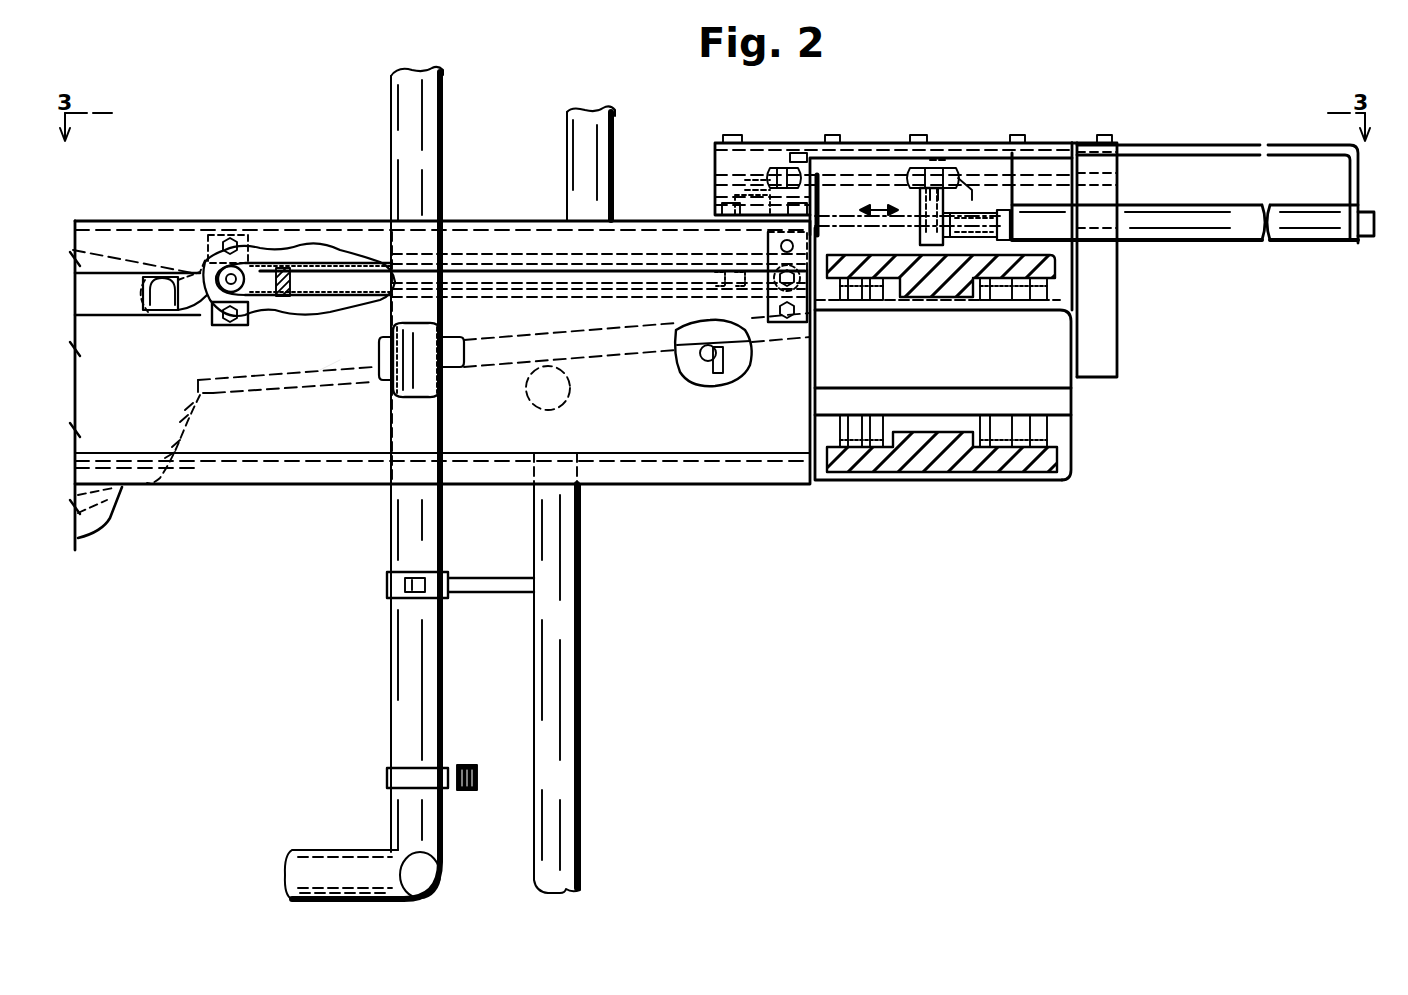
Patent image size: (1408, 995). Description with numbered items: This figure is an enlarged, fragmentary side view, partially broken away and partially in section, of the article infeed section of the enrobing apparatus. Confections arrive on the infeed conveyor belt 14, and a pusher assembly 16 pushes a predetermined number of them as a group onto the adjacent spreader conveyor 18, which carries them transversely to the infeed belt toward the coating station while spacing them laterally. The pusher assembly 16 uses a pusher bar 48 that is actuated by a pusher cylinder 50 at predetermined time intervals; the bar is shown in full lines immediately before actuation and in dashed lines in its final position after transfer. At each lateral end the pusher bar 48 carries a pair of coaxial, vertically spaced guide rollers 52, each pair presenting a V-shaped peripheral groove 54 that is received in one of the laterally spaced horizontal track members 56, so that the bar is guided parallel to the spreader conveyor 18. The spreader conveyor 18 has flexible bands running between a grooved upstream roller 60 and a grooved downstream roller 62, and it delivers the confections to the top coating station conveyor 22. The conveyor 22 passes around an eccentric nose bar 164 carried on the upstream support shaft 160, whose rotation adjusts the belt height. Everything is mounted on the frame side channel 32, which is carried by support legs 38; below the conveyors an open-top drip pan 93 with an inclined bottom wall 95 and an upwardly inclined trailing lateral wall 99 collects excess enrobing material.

The infeed conveyor belt 14 is at (1043, 265).
The pusher assembly 16 is at (1224, 313).
The spreader conveyor 18 is at (408, 263).
The top coating station conveyor 22 is at (125, 245).
The side channel 32 is at (664, 423).
The support legs 38 is at (580, 692).
The pusher bar 48 is at (712, 208).
The pusher cylinder 50 is at (1208, 241).
The guide rollers 52 is at (775, 168).
The V-shaped peripheral groove 54 is at (718, 192).
The horizontal track members 56 is at (1042, 170).
The upstream roller 60 is at (766, 297).
The downstream roller 62 is at (215, 298).
The drip pan 93 is at (108, 518).
The inclined bottom wall 95 is at (188, 442).
The upwardly inclined lateral wall 99 is at (322, 376).
The upstream support shaft 160 is at (148, 293).
The nose bar 164 is at (192, 260).